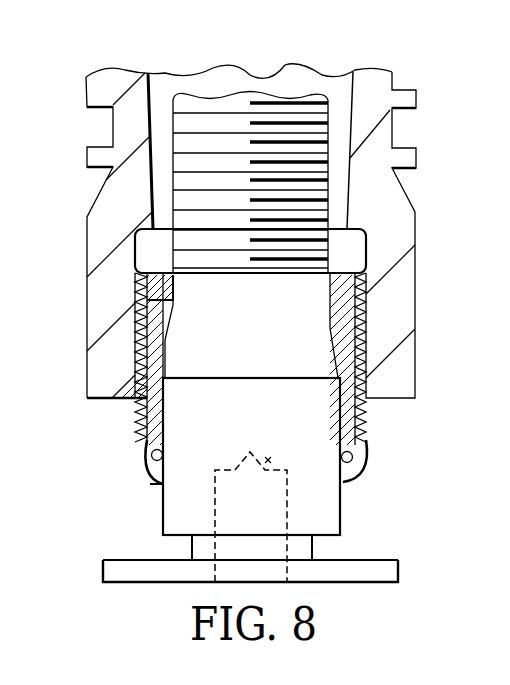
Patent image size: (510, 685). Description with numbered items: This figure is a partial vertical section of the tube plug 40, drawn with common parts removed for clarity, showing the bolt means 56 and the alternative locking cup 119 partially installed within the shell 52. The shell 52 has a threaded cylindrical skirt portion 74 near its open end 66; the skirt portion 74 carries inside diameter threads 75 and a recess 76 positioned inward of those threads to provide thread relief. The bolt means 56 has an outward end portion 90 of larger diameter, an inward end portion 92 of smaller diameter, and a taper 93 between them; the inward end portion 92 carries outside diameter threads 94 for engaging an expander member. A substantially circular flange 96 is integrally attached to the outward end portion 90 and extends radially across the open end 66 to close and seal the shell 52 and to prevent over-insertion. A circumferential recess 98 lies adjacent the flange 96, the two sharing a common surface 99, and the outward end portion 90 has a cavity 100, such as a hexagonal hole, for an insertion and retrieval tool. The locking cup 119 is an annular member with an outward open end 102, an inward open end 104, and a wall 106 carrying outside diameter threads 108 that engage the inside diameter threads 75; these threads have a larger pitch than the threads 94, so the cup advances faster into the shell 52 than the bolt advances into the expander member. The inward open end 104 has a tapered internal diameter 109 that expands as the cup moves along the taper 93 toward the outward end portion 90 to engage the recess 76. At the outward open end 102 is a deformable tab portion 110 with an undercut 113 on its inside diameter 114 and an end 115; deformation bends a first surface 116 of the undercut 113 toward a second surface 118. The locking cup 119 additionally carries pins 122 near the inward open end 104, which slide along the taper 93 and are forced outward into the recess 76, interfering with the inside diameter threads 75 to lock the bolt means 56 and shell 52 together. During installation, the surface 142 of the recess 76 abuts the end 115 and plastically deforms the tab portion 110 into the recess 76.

The valve assembly 40 is at (98, 57).
The shell 52 is at (86, 78).
The bolt means 56 is at (231, 98).
The open end 66 is at (108, 370).
The threaded cylindrical skirt portion 74 is at (417, 272).
The inside diameter threads 75 is at (368, 342).
The recess 76 is at (374, 256).
The outward end portion 90 is at (318, 497).
The inward end portion 92 is at (328, 110).
The taper 93 is at (332, 332).
The outside diameter threads 94 is at (328, 160).
The circular flange 96 is at (398, 565).
The circumferential recess 98 is at (313, 552).
The surface 99 is at (347, 558).
The cavity 100 is at (268, 460).
The outward open end 102 is at (150, 475).
The inward open end 104 is at (133, 308).
The wall 106 is at (338, 378).
The outside diameter threads 108 is at (358, 452).
The tapered internal diameter 109 is at (173, 299).
The deformable tab portion 110 is at (147, 455).
The undercut 113 is at (341, 457).
The inside diameter 114 is at (165, 433).
The end 115 is at (160, 482).
The first surface 116 is at (163, 460).
The second surface 118 is at (162, 453).
The locking cup 119 is at (358, 435).
The pins 122 is at (133, 316).
The surface 142 is at (357, 231).